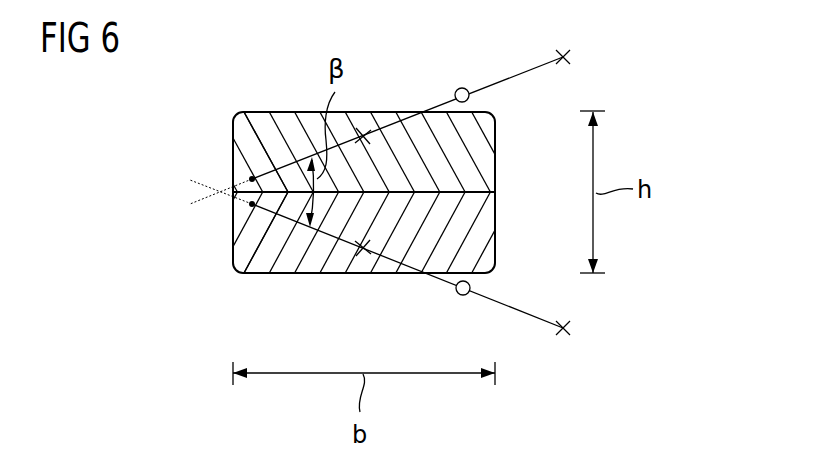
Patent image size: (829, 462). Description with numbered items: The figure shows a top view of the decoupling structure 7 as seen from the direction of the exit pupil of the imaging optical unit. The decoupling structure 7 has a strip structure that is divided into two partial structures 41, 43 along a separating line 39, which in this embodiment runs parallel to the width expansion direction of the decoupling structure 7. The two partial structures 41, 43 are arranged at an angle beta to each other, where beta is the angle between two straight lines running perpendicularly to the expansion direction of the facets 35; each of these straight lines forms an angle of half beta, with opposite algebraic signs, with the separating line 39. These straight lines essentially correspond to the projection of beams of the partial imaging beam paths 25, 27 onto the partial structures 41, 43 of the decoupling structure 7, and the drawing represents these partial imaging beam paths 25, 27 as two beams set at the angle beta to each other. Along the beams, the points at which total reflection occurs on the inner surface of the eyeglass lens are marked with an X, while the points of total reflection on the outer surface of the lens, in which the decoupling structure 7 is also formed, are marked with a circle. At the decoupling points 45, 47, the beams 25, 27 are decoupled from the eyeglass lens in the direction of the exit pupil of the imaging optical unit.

The decoupling structure 7 is at (218, 112).
The partial imaging beam path 25 is at (500, 80).
The partial imaging beam path 27 is at (490, 302).
The facets 35 is at (305, 136).
The separating line 39 is at (472, 192).
The partial structure 41 is at (445, 139).
The partial structure 43 is at (447, 245).
The decoupling point 45 is at (252, 179).
The decoupling point 47 is at (252, 204).